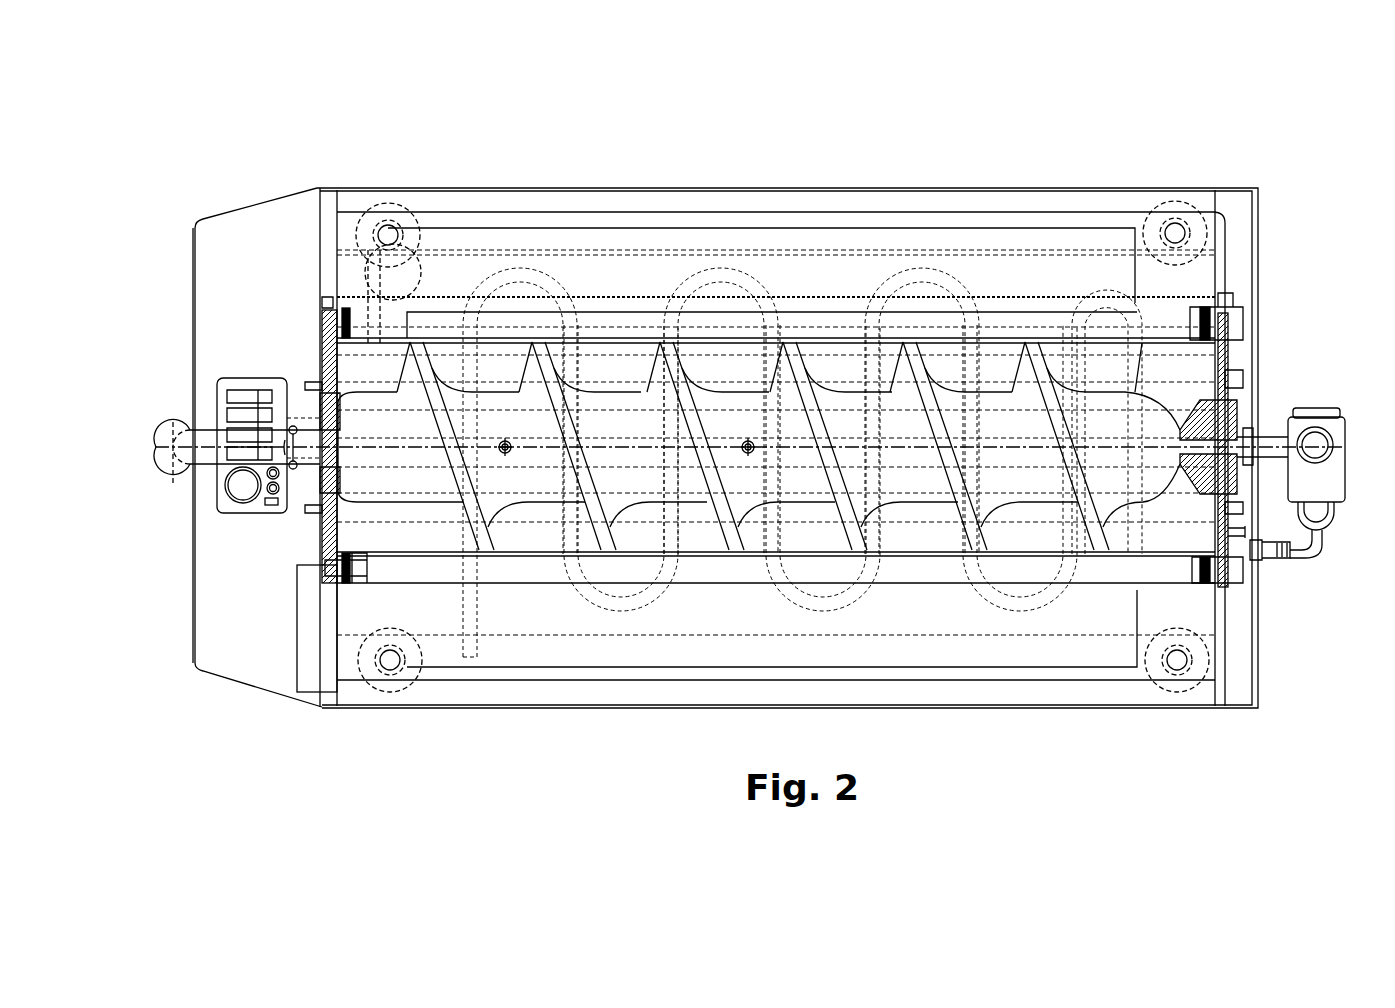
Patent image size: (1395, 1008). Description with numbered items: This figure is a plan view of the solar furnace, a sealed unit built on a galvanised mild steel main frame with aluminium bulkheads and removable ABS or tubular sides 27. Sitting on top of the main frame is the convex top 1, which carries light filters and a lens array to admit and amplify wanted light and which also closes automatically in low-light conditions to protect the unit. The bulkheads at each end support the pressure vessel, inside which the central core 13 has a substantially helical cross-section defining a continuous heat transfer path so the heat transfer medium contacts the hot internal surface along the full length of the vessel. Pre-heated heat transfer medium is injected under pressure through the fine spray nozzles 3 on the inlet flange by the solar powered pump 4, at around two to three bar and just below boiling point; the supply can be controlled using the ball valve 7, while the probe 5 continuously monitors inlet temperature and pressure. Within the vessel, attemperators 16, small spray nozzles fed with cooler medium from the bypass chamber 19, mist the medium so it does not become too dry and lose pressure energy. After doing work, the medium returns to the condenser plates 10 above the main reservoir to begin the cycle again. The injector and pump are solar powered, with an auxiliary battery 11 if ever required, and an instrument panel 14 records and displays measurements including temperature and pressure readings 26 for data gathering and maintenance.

The convex top 1 is at (348, 365).
The fine spray nozzles 3 is at (1199, 416).
The solar powered pump 4 is at (1327, 477).
The probe 5 is at (1243, 531).
The ball valve 7 is at (1282, 560).
The condenser plates 10 is at (549, 276).
The auxiliary battery 11 is at (310, 665).
The central core 13 is at (335, 421).
The instrument panel 14 is at (218, 392).
The attemperators 16 is at (503, 440).
The bypass chamber 19 is at (855, 226).
The temperature and pressure readings 26 is at (240, 487).
The removable sides 27 is at (191, 637).